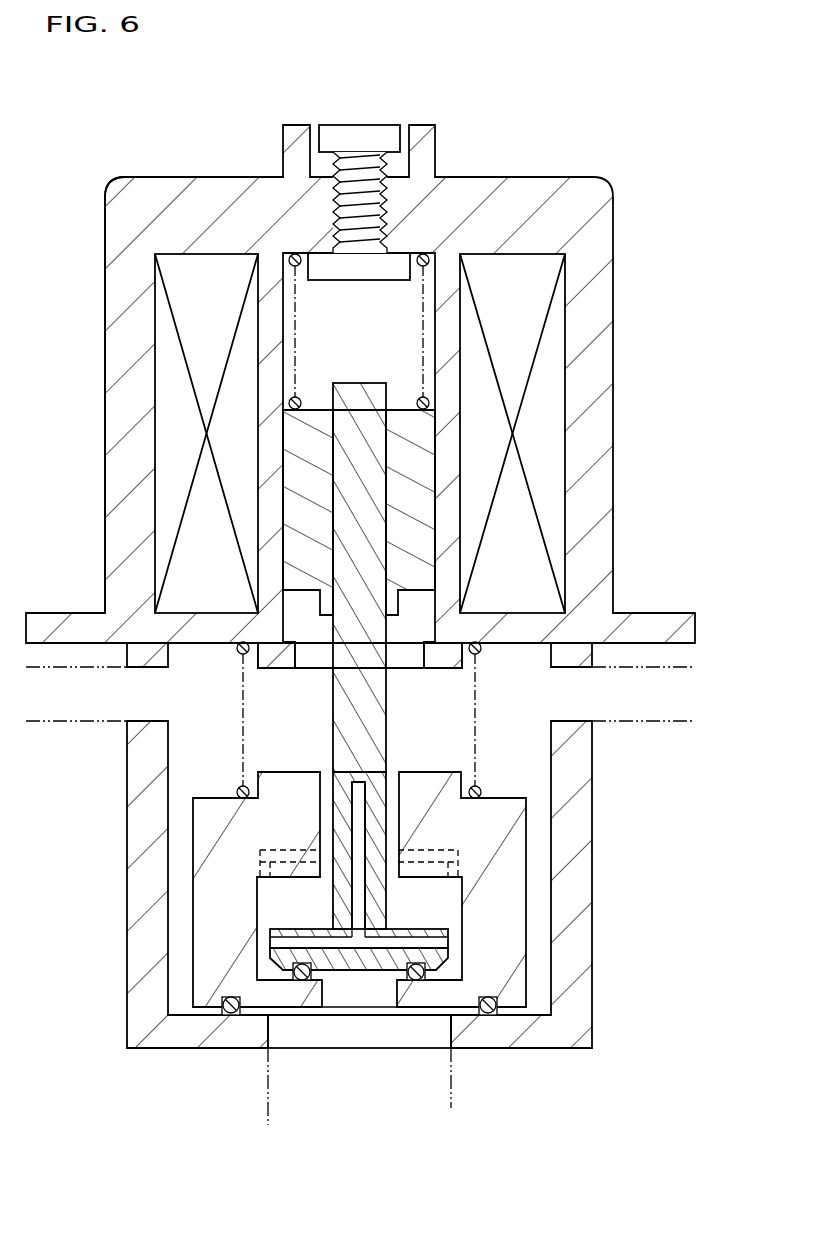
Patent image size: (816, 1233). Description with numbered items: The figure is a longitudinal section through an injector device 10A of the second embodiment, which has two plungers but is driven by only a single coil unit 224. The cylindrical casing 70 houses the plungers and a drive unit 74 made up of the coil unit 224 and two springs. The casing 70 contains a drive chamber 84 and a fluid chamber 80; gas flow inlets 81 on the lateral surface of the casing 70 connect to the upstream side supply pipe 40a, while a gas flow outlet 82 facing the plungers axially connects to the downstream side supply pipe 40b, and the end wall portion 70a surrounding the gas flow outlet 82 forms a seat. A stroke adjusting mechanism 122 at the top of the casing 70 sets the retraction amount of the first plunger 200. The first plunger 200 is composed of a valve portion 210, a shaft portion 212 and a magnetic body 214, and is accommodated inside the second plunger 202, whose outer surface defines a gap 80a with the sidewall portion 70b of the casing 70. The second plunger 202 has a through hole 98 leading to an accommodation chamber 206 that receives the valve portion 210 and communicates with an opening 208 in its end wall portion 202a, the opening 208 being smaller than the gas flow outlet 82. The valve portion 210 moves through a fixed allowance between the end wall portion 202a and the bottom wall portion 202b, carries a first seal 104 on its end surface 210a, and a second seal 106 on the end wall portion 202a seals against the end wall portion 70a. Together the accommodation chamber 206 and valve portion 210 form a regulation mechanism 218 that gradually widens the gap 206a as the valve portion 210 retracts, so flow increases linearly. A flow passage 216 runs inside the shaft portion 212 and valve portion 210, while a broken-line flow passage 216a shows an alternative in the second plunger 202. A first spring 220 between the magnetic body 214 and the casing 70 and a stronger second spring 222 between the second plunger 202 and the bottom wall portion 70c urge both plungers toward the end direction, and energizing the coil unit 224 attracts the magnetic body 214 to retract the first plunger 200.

The injector device 10A is at (366, 74).
The casing 70 is at (150, 172).
The drive unit 74 is at (152, 270).
The coil unit 224 is at (165, 338).
The first spring 220 is at (440, 291).
The drive chamber 84 is at (318, 312).
The stroke adjusting mechanism 122 is at (370, 135).
The shaft portion 212 is at (357, 390).
The magnetic body 214 is at (400, 425).
The first plunger 200 is at (342, 705).
The flow passage 216 is at (370, 778).
The flow passage 216a is at (288, 850).
The bottom wall portion 70c is at (212, 632).
The fluid chamber 80 is at (505, 655).
The gas flow inlets 81 is at (575, 680).
The upstream side supply pipe 40a is at (80, 722).
The second spring 222 is at (478, 675).
The sidewall portion 70b is at (150, 830).
The gap 80a is at (538, 840).
The through hole 98 is at (390, 822).
The second plunger 202 is at (193, 876).
The accommodation chamber 206 is at (437, 912).
The bottom wall portion 202b is at (300, 868).
The valve portion 210 is at (270, 932).
The end surface 210a is at (340, 975).
The end wall portion 202a is at (433, 980).
The gap 206a is at (422, 982).
The regulation mechanism 218 is at (528, 997).
The end wall portion 70a is at (190, 1040).
The second seal 106 is at (230, 1016).
The gas flow outlet 82 is at (298, 1028).
The first seal 104 is at (318, 985).
The opening 208 is at (385, 1010).
The downstream side supply pipe 40b is at (452, 1108).